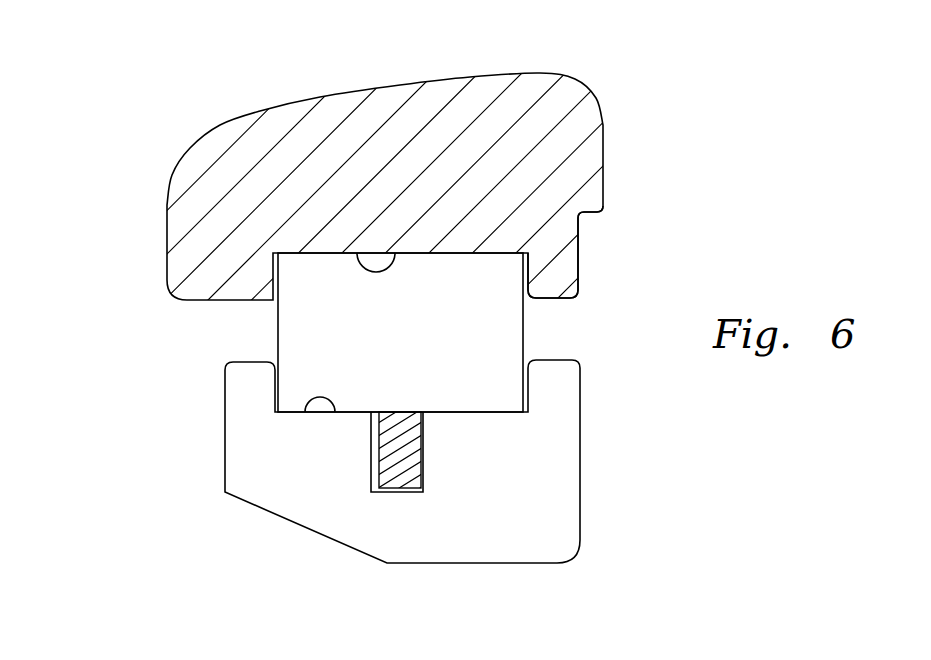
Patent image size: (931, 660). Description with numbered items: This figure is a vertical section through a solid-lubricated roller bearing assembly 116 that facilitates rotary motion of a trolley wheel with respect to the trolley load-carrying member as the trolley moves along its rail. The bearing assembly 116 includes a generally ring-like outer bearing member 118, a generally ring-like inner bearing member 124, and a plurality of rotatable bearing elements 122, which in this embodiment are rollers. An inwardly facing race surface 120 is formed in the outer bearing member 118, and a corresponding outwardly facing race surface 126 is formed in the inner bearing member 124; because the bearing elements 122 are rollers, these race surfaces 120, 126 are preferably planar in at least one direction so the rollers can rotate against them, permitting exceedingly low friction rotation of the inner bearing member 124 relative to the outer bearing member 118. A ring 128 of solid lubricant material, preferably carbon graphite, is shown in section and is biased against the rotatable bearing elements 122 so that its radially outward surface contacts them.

The bearing assembly 116 is at (132, 239).
The outer bearing member 118 is at (606, 251).
The inwardly facing race surface 120 is at (384, 268).
The rotatable bearing elements 122 is at (330, 323).
The inner bearing member 124 is at (611, 457).
The outwardly facing race surface 126 is at (337, 412).
The ring of solid lubricant material 128 is at (405, 475).